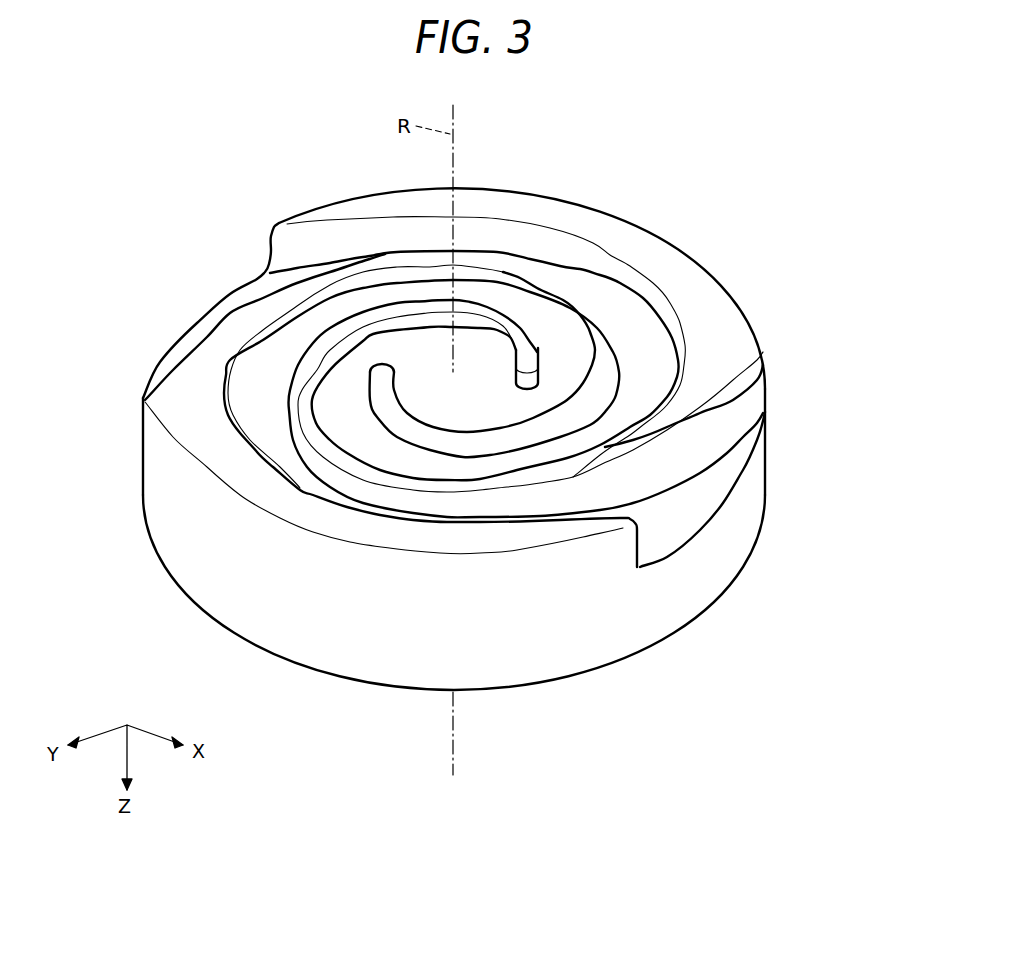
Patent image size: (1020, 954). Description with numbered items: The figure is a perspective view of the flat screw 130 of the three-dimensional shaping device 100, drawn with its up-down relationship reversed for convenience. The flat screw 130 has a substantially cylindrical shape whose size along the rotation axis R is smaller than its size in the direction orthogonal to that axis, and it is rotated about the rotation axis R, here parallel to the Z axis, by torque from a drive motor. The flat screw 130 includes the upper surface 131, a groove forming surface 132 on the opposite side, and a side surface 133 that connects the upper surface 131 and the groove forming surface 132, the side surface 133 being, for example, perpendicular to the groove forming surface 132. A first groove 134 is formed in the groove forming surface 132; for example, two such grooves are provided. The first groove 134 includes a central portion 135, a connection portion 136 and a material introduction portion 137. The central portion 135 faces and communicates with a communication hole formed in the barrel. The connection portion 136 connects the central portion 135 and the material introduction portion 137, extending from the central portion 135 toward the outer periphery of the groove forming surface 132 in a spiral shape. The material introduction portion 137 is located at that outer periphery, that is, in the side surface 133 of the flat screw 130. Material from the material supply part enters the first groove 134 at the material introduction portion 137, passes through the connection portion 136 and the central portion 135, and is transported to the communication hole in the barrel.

The fluid treatment device 100 is at (826, 118).
The flat screw 130 is at (767, 194).
The upper surface 131 is at (510, 688).
The groove forming surface 132 is at (571, 216).
The side surface 133 is at (210, 550).
The first groove 134 is at (230, 279).
The central portion 135 is at (472, 400).
The connection portion 136 is at (643, 333).
The material introduction portion 137 is at (693, 513).